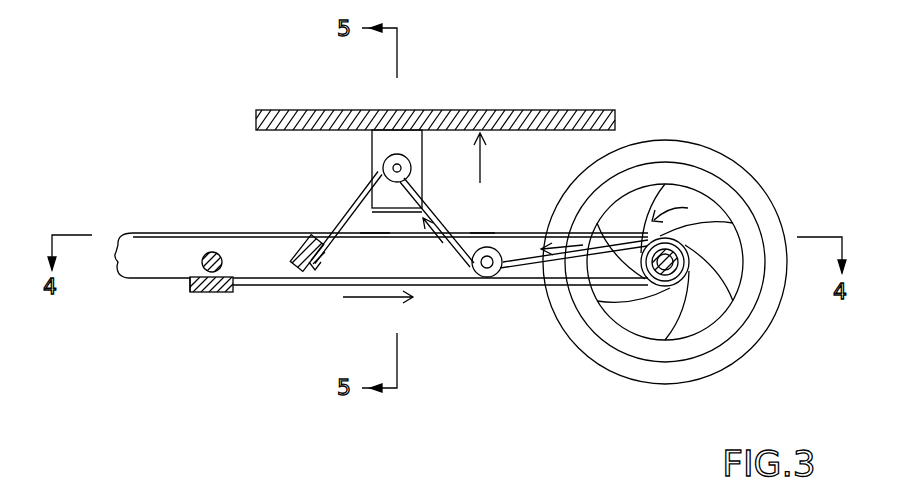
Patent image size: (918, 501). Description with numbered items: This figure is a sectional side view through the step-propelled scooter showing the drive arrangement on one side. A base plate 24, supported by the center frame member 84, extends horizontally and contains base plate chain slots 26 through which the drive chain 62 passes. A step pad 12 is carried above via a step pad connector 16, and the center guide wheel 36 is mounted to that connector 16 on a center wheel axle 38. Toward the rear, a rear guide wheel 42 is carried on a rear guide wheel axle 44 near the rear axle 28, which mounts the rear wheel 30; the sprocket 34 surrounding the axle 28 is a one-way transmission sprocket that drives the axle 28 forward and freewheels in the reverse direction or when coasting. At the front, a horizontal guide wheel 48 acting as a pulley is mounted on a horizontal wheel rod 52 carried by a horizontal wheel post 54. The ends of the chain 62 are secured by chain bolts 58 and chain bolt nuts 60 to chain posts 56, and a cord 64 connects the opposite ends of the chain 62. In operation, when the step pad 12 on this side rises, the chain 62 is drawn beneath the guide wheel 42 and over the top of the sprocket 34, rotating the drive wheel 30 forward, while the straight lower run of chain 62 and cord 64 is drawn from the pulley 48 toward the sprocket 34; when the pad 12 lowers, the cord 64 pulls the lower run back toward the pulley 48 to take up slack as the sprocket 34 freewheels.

The step pad 12 is at (583, 110).
The step pad connector 16 is at (425, 152).
The base plate 24 is at (240, 232).
The base plate chain slot 26 is at (372, 238).
The rear axle 28 is at (720, 310).
The rear wheel 30 is at (688, 157).
The sprocket 34 is at (643, 230).
The center guide wheel 36 is at (383, 165).
The center wheel axle 38 is at (425, 196).
The rear guide wheel 42 is at (480, 278).
The rear guide wheel axle 44 is at (460, 288).
The horizontal guide wheel 48 is at (200, 293).
The horizontal wheel rod 52 is at (200, 262).
The horizontal wheel post 54 is at (190, 277).
The chain post 56 is at (285, 252).
The chain bolt 58 is at (328, 272).
The chain bolt nut 60 is at (295, 238).
The drive chain 62 is at (453, 245).
The cord 64 is at (295, 288).
The center frame member 84 is at (118, 272).